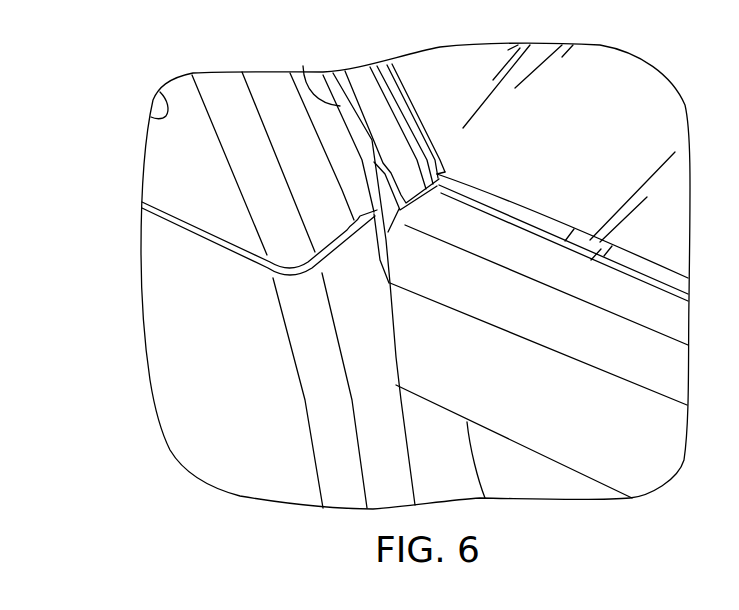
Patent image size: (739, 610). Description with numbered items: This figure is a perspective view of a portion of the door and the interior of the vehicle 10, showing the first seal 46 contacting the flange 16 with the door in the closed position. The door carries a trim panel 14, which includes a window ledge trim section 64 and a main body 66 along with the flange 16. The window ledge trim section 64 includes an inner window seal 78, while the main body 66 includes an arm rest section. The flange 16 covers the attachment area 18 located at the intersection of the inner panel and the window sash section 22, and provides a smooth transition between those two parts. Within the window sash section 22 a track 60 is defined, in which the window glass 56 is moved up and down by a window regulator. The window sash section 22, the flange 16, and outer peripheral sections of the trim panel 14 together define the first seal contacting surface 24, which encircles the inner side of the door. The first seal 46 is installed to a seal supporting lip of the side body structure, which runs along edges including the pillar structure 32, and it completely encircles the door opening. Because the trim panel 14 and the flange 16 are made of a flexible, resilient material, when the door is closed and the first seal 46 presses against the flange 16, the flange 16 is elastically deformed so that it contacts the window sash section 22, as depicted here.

The vehicle 10 is at (230, 44).
The trim panel 14 is at (386, 356).
The flange 16 is at (386, 204).
The attachment area 18 is at (410, 186).
The window sash section 22 is at (367, 93).
The first seal contacting surface 24 is at (372, 147).
The pillar structure 32 is at (190, 327).
The first seal 46 is at (317, 75).
The window glass 56 is at (610, 93).
The track 60 is at (412, 110).
The window ledge trim section 64 is at (641, 303).
The main body 66 is at (530, 477).
The inner window seal 78 is at (517, 222).